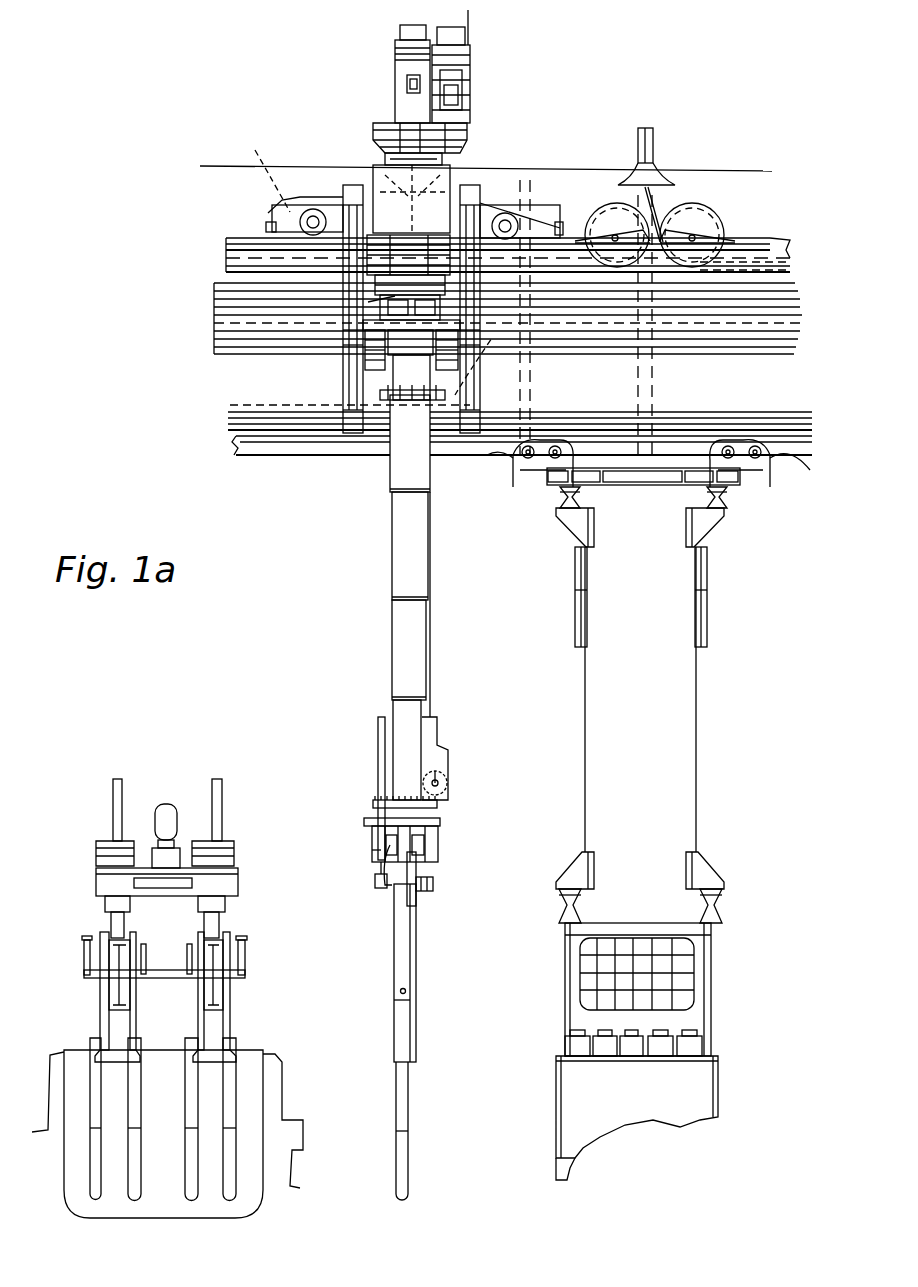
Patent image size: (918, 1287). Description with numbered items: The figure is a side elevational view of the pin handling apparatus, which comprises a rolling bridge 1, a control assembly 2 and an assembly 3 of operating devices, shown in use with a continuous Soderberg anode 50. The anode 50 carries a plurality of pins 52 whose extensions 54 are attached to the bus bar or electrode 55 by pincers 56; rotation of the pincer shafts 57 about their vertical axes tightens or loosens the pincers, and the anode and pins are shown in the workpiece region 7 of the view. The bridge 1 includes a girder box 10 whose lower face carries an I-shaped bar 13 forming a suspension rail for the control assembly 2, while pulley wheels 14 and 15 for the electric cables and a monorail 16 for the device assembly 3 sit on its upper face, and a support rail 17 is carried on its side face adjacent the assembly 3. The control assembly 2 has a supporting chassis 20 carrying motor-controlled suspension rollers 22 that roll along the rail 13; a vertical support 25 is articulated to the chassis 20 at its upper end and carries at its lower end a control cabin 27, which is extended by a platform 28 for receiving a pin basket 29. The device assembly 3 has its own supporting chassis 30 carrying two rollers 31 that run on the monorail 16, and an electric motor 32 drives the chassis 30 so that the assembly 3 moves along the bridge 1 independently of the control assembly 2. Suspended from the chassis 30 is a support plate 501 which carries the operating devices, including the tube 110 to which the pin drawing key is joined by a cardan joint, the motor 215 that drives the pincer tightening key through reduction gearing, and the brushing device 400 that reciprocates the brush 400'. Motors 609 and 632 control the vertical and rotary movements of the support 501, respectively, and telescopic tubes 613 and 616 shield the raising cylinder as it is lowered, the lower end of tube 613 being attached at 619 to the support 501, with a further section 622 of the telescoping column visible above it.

The rolling bridge 1 is at (200, 283).
The control assembly 2 is at (548, 745).
The assembly of operating devices 3 is at (340, 378).
The workpiece 7 is at (44, 1171).
The girder box 10 is at (215, 355).
The I-shaped bar 13 is at (265, 442).
The pulley wheel 14 is at (606, 205).
The pulley wheel 15 is at (700, 205).
The monorail 16 is at (243, 240).
The support rail 17 is at (228, 418).
The supporting chassis 20 is at (640, 485).
The suspension rollers 22 is at (520, 470).
The vertical support 25 is at (680, 790).
The control cabin 27 is at (707, 1012).
The platform 28 is at (556, 1170).
The pin basket 29 is at (705, 1076).
The supporting chassis 30 is at (350, 205).
The rollers 31 is at (272, 225).
The electric motor 32 is at (260, 172).
The continuous Soderberg anode 50 is at (72, 1050).
The pins 52 is at (590, 1040).
The extensions 54 is at (232, 1032).
The bus bar or electrode 55 is at (227, 990).
The pincers 56 is at (240, 970).
The shafts 57 is at (84, 955).
The tube 110 is at (420, 925).
The motor 215 is at (392, 885).
The brushing device 400 is at (335, 849).
The brush 400' is at (467, 879).
The support plate 501 is at (440, 822).
The motor 609 is at (468, 105).
The telescopic tube 613 is at (395, 708).
The telescopic tube 616 is at (395, 645).
The external ring 619 is at (395, 562).
The column segment 622 is at (400, 475).
The motor 632 is at (368, 302).